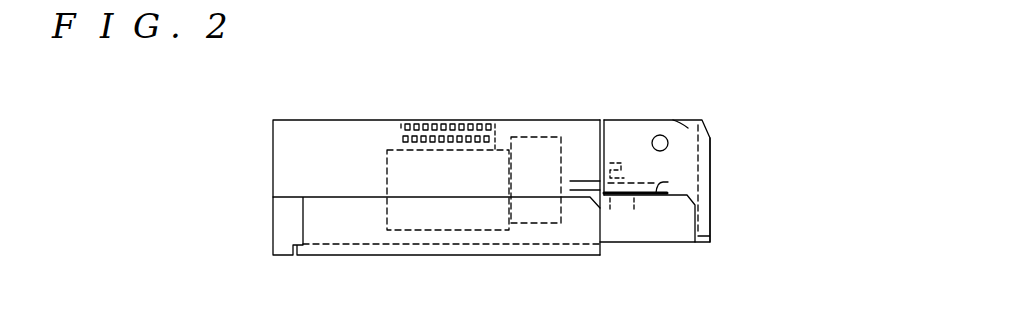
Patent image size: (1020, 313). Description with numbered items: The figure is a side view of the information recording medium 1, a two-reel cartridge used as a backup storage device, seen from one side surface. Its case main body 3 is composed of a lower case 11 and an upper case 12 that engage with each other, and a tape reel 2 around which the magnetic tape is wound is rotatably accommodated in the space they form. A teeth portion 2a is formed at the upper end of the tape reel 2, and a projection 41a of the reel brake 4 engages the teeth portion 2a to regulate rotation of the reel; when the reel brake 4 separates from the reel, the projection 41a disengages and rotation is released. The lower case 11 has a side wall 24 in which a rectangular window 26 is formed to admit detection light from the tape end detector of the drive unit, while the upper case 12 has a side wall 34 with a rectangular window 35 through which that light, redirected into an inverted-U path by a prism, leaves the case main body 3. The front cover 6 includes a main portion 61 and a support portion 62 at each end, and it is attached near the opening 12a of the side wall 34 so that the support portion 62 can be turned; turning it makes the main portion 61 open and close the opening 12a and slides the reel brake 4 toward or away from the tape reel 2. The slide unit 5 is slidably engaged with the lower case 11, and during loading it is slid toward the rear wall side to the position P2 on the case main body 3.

The information recording medium 1 is at (437, 76).
The case main body 3 is at (236, 193).
The upper case 12 is at (276, 140).
The lower case 11 is at (276, 236).
The slide unit 5 is at (496, 257).
The position P2 is at (393, 268).
The tape reel 2 is at (393, 176).
The teeth portion 2a is at (404, 137).
The projection 41a is at (510, 135).
The reel brake 4 is at (575, 154).
The side wall 34 is at (605, 122).
The front cover 6 is at (733, 125).
The main portion 61 is at (711, 158).
The support portion 62 is at (673, 119).
The opening 12a is at (692, 186).
The window 35 is at (627, 160).
The window 26 is at (624, 207).
The side wall 24 is at (673, 243).